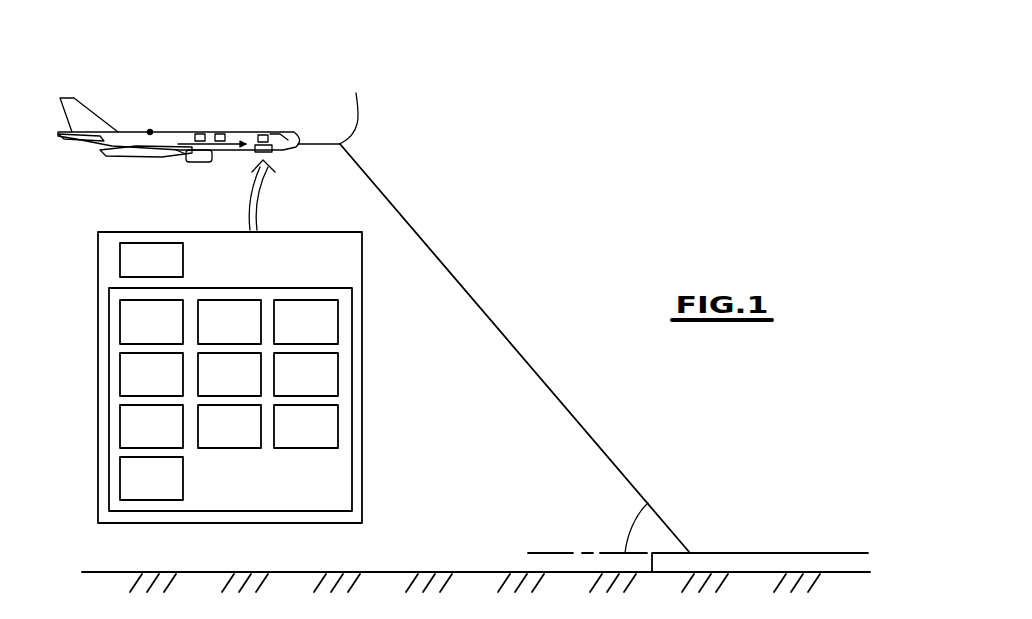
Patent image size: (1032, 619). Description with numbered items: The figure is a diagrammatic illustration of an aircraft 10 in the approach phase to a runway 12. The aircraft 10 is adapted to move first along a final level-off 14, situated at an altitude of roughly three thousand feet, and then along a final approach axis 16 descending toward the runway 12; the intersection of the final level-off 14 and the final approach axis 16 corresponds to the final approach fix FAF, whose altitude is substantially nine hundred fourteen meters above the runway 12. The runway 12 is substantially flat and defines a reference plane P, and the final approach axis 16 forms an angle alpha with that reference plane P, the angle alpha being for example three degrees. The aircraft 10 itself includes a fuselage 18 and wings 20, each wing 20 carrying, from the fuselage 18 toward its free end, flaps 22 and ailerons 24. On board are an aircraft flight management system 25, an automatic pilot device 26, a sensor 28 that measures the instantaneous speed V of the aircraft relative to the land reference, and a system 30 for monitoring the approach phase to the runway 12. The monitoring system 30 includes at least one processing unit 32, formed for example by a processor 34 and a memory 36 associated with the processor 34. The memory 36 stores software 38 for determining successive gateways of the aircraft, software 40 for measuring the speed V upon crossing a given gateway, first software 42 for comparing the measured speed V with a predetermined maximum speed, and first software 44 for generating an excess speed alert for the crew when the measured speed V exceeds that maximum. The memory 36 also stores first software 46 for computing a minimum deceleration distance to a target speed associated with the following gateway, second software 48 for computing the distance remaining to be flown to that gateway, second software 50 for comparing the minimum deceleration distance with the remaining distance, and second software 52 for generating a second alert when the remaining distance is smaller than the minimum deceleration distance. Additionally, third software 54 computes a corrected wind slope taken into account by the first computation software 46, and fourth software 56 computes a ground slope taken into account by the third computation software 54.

The aircraft 10 is at (309, 87).
The runway 12 is at (742, 558).
The final level-off 14 is at (318, 145).
The final approach axis 16 is at (402, 213).
The fuselage 18 is at (94, 150).
The wings 20 is at (150, 129).
The flaps 22 is at (160, 157).
The ailerons 24 is at (138, 157).
The aircraft flight management system 25 is at (220, 133).
The automatic pilot device 26 is at (264, 134).
The sensor 28 is at (200, 133).
The monitoring system 30 is at (291, 153).
The processing unit 32 is at (360, 400).
The processor 34 is at (138, 258).
The memory 36 is at (352, 323).
The determining software 38 is at (141, 334).
The measuring software 40 is at (219, 334).
The first comparison software 42 is at (295, 334).
The first alert generation software 44 is at (141, 386).
The first computation software 46 is at (219, 386).
The second computation software 48 is at (295, 386).
The second comparison software 50 is at (141, 438).
The second alert generation software 52 is at (219, 438).
The third computation software 54 is at (295, 438).
The fourth computation software 56 is at (141, 490).
The final approach fix FAF is at (359, 103).
The instantaneous speed V is at (239, 132).
The reference plane P is at (553, 553).
The angle alpha is at (630, 523).